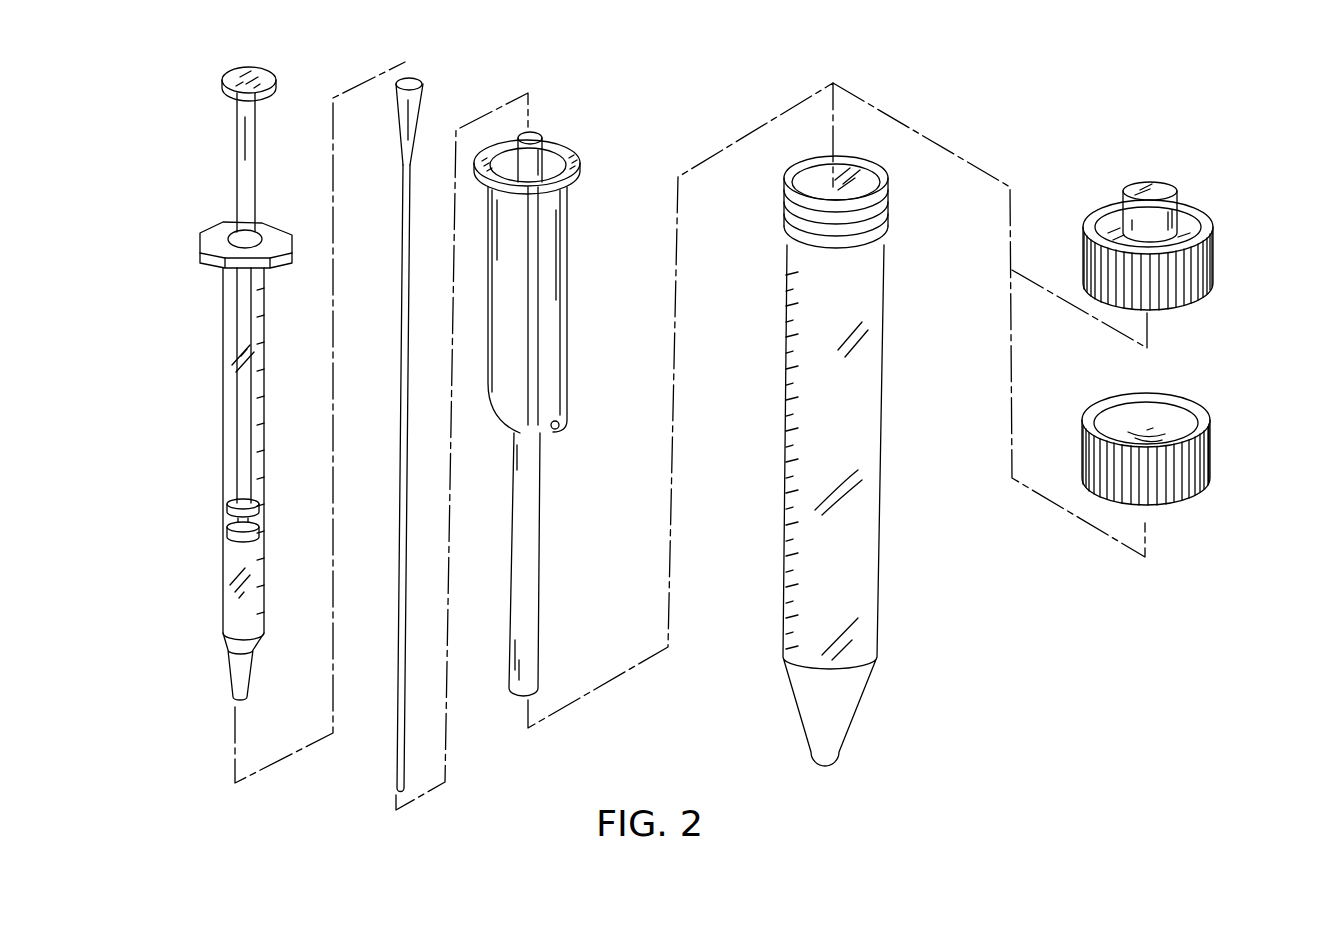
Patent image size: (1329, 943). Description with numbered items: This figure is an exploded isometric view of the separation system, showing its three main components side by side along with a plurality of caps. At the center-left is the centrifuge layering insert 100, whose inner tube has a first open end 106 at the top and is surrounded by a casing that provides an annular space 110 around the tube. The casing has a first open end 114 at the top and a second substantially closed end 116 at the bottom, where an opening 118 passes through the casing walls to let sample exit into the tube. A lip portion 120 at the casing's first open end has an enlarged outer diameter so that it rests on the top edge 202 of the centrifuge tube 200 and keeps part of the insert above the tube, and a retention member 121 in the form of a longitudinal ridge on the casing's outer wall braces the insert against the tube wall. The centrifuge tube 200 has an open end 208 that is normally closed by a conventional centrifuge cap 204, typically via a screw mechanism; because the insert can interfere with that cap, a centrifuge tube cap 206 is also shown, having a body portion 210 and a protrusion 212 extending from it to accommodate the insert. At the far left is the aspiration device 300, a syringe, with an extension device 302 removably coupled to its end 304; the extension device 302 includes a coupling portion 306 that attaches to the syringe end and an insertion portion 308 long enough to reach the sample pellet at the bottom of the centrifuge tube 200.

The centrifuge layering insert 100 is at (561, 377).
The first open end 106 is at (535, 130).
The annular space 110 is at (573, 153).
The first open end 114 is at (495, 143).
The second substantially closed end 116 is at (548, 437).
The opening 118 is at (558, 424).
The lip portion 120 is at (573, 188).
The retention member 121 is at (537, 281).
The centrifuge tube 200 is at (831, 418).
The top edge 202 is at (887, 172).
The centrifuge cap 204 is at (1212, 458).
The centrifuge tube cap 206 is at (1177, 215).
The open end 208 is at (853, 177).
The body portion 210 is at (1213, 250).
The protrusion 212 is at (1135, 180).
The aspiration device 300 is at (197, 402).
The extension device 302 is at (416, 422).
The end 304 is at (228, 676).
The coupling portion 306 is at (400, 124).
The insertion portion 308 is at (397, 347).